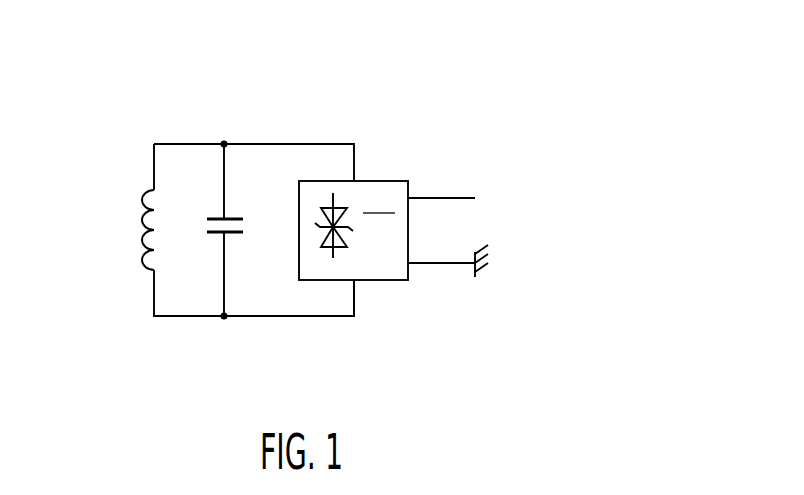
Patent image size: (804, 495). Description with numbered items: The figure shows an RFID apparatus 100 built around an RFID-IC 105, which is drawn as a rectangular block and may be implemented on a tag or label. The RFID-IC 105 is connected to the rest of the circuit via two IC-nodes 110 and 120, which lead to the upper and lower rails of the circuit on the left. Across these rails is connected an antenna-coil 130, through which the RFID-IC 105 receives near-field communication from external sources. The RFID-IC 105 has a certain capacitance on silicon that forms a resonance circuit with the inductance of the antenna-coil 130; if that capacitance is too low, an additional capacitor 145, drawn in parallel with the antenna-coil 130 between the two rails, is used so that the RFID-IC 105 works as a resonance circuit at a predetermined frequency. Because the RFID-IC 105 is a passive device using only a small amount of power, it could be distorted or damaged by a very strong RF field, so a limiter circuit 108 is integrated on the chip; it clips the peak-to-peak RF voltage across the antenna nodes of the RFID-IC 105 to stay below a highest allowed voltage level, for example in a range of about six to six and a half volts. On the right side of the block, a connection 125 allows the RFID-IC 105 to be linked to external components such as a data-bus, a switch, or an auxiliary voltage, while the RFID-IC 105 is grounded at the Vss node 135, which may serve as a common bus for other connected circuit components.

The RFID apparatus 100 is at (529, 150).
The RFID-IC 105 is at (379, 200).
The limiter circuit 108 is at (321, 206).
The IC-node 110 is at (356, 179).
The IC-node 120 is at (358, 282).
The connection 125 is at (410, 195).
The antenna-coil 130 is at (145, 199).
The Vss node 135 is at (410, 265).
The capacitor 145 is at (230, 219).